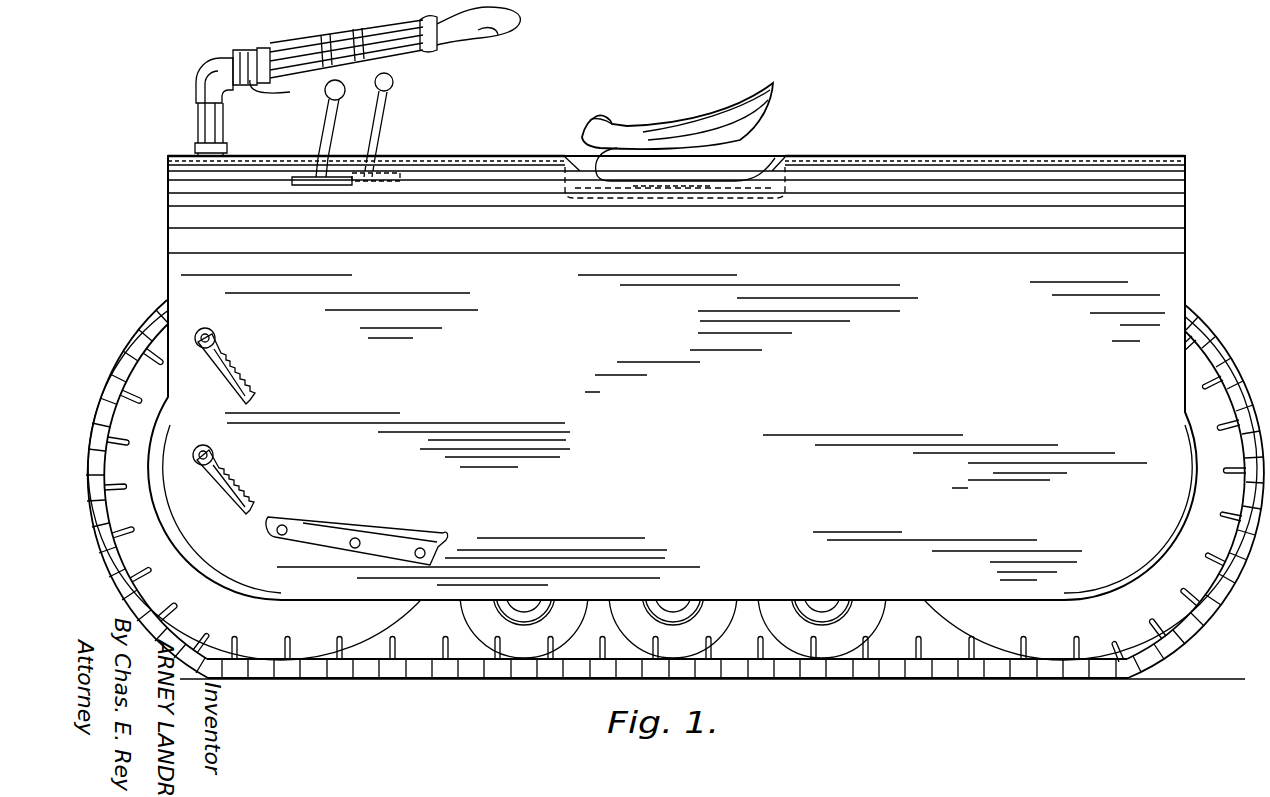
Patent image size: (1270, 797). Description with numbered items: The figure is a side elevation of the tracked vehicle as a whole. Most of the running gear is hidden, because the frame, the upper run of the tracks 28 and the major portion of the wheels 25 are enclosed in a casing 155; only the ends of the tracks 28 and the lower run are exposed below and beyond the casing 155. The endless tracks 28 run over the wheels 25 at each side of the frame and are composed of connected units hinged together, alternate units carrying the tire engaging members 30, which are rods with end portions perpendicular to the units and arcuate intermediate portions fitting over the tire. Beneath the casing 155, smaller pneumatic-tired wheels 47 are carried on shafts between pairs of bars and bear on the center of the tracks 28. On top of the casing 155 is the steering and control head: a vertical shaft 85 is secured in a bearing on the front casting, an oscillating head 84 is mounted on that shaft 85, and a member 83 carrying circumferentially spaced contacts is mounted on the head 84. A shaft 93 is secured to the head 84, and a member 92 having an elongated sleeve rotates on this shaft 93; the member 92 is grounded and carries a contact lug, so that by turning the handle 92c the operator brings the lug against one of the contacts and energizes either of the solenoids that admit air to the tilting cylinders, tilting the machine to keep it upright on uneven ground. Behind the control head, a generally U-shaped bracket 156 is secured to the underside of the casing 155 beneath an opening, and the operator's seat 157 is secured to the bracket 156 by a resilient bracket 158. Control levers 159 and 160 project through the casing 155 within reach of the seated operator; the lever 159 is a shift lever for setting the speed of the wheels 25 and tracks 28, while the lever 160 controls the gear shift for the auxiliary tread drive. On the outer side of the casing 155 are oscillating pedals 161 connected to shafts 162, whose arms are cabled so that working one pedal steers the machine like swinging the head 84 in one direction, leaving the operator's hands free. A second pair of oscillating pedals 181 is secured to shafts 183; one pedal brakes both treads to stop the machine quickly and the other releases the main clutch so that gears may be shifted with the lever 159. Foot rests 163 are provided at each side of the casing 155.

The wheels 25 is at (108, 400).
The endless tracks 28 is at (137, 347).
The tire engaging members 30 is at (158, 556).
The wheels 47 is at (640, 637).
The member 83 is at (273, 75).
The oscillating head 84 is at (213, 77).
The vertical shaft 85 is at (225, 118).
The member 92 is at (402, 47).
The handle 92c is at (482, 35).
The shaft 93 is at (352, 50).
The casing 155 is at (923, 187).
The bracket 156 is at (770, 200).
The operator's seat 157 is at (771, 113).
The resilient bracket 158 is at (640, 155).
The control lever 159 is at (383, 110).
The control lever 160 is at (328, 125).
The oscillating pedals 161 is at (236, 482).
The shafts 162 is at (198, 450).
The foot rests 163 is at (303, 530).
The oscillating pedals 181 is at (226, 362).
The shafts 183 is at (206, 330).